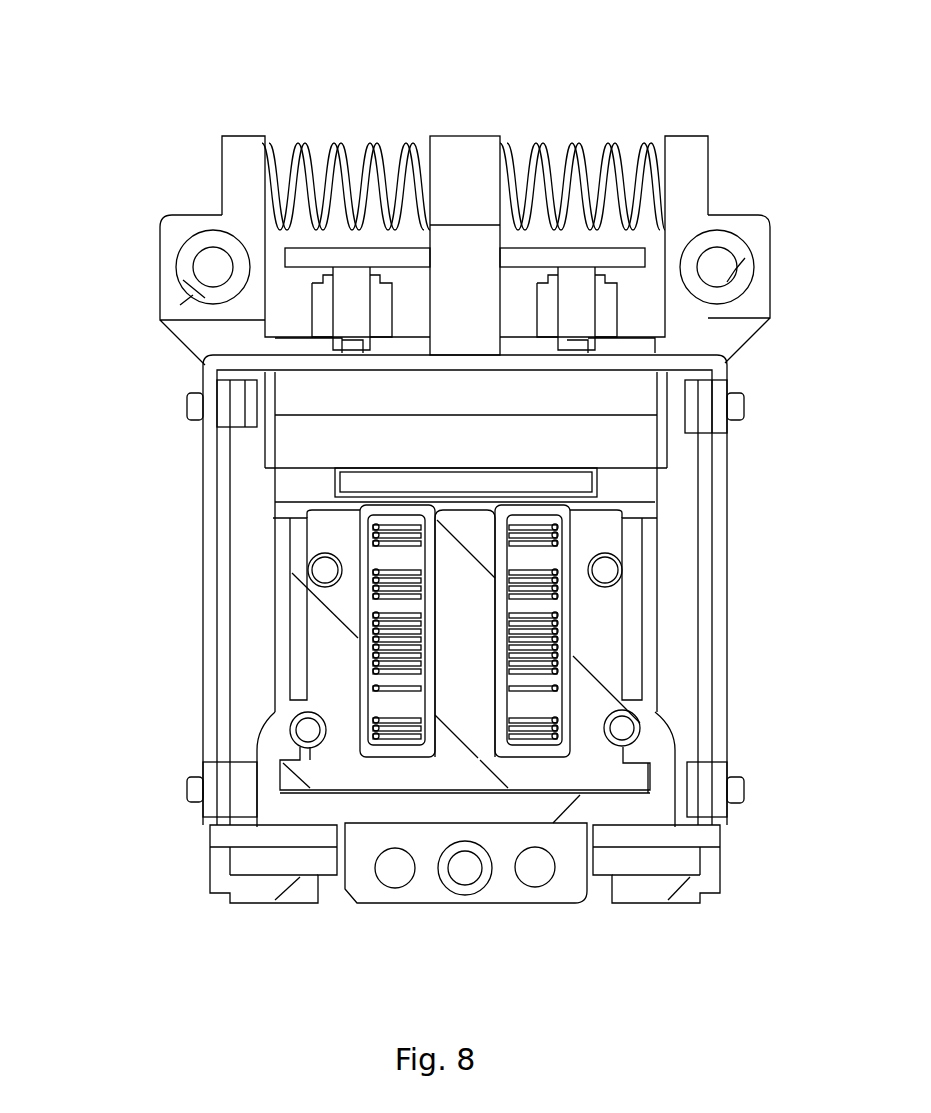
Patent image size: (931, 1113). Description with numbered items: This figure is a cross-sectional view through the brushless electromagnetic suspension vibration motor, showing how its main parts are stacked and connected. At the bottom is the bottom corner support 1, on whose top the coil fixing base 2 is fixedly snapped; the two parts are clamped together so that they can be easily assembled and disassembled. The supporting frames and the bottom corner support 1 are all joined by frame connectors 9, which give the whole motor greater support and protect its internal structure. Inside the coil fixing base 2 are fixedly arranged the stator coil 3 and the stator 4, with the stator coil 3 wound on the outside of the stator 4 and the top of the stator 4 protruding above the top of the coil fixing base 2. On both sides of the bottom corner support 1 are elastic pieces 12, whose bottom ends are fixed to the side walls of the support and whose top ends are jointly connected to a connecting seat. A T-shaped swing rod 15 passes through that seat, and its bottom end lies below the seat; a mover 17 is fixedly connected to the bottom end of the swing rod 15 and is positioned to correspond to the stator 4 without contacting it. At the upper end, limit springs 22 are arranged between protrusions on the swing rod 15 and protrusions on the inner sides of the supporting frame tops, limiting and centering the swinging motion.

The bottom corner support 1 is at (287, 910).
The coil fixing base 2 is at (333, 706).
The stator coil 3 is at (560, 615).
The stator 4 is at (472, 523).
The frame connector 9 is at (465, 885).
The elastic piece 12 is at (205, 597).
The swing rod 15 is at (468, 180).
The mover 17 is at (540, 484).
The limit spring 22 is at (338, 166).